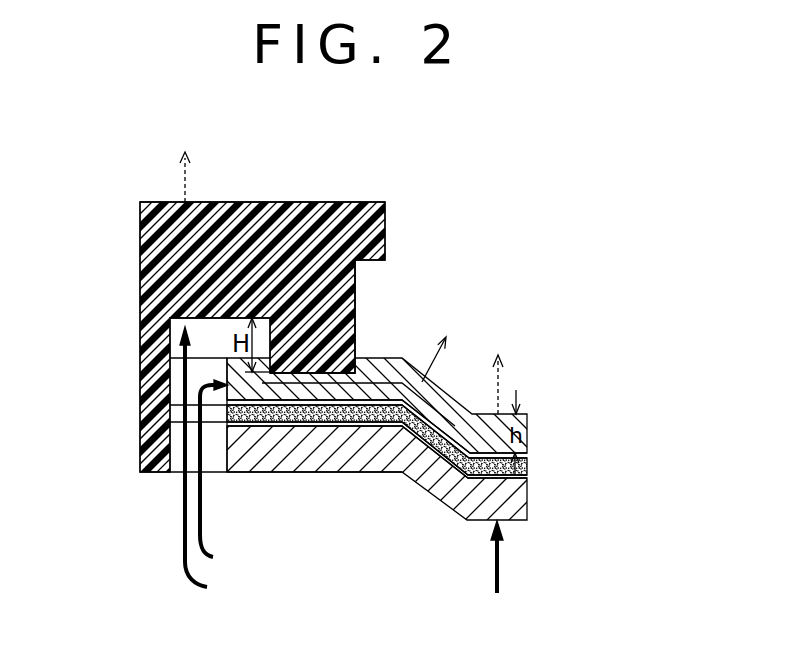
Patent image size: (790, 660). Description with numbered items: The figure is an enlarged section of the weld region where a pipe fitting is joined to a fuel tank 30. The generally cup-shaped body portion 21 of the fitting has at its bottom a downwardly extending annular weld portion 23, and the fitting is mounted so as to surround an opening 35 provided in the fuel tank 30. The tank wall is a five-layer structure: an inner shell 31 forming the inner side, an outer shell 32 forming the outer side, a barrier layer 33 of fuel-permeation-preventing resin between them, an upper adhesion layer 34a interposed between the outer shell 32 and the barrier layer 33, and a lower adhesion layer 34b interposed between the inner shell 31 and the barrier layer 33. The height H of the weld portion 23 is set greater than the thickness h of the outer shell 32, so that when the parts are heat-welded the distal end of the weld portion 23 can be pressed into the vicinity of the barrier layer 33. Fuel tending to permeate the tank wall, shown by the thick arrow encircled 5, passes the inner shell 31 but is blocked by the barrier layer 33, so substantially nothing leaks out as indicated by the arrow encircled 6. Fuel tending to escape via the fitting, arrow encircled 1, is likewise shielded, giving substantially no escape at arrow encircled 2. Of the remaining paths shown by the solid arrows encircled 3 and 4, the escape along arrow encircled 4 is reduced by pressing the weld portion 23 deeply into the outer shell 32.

The body portion 21 is at (295, 204).
The weld portion 23 is at (355, 337).
The fuel tank 30 is at (363, 474).
The inner shell 31 is at (523, 507).
The outer shell 32 is at (528, 420).
The barrier layer 33 is at (528, 465).
The upper adhesion layer 34a is at (528, 457).
The lower adhesion layer 34b is at (528, 478).
The opening 35 is at (175, 462).
The arrow encircled one 1 is at (206, 464).
The arrow encircled two 2 is at (199, 176).
The arrow encircled three 3 is at (219, 474).
The arrow encircled four 4 is at (441, 347).
The arrow encircled five 5 is at (497, 570).
The arrow encircled six 6 is at (498, 369).